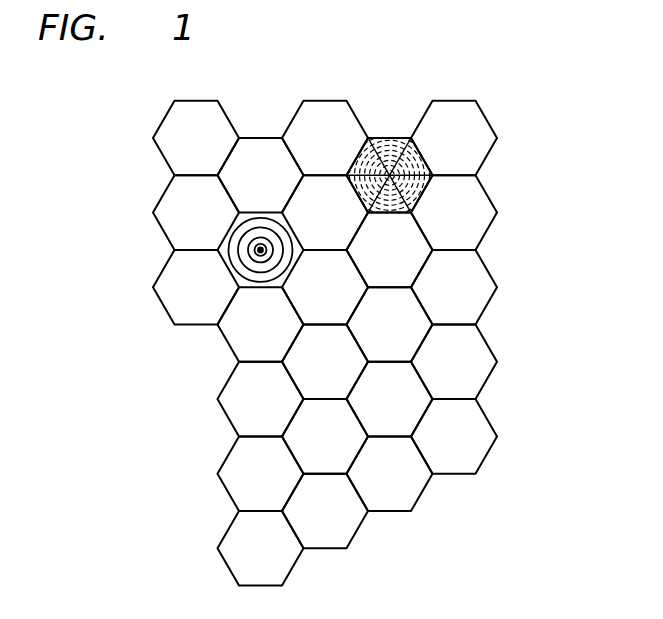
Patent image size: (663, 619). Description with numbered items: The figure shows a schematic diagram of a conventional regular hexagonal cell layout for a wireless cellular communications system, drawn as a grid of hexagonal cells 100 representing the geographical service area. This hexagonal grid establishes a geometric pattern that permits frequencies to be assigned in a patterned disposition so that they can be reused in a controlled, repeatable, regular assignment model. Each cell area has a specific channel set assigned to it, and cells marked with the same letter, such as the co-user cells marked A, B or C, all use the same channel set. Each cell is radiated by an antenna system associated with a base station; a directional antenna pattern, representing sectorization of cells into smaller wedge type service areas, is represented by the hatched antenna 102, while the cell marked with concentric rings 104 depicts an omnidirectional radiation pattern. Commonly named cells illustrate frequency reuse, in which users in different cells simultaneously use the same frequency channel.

The hexagonal cell grid 100 is at (325, 343).
The antenna 102 is at (390, 175).
The concentric-ring hexagonal cell 104 is at (260, 248).